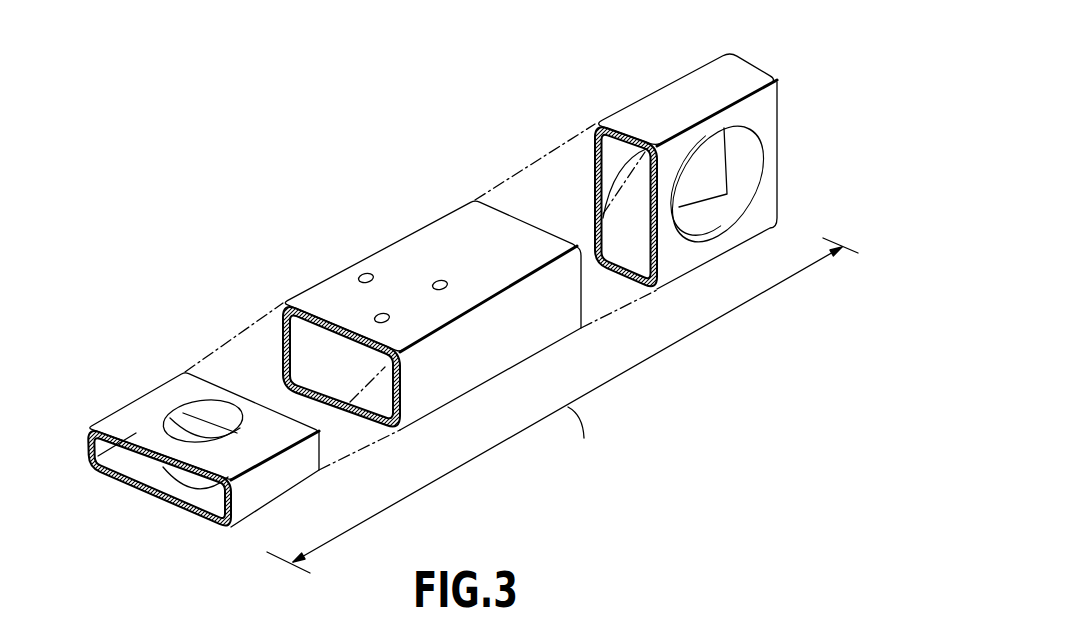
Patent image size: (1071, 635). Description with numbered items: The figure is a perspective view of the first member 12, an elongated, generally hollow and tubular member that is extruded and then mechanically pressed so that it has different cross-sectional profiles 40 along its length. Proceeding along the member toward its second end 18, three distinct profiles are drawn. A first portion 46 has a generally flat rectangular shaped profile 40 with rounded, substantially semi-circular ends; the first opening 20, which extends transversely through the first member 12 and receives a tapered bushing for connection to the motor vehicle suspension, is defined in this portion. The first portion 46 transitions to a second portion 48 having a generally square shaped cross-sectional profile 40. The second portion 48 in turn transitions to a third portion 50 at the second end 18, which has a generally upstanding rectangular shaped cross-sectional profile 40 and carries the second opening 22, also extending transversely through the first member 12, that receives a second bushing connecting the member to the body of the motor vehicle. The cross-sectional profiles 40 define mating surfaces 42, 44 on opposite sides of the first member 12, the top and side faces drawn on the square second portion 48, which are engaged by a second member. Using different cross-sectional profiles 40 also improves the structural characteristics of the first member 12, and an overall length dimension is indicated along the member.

The first member 12 is at (245, 163).
The second end 18 is at (753, 66).
The first opening 20 is at (167, 462).
The second opening 22 is at (761, 178).
The cross-sectional profiles 40 is at (198, 523).
The mating surface 42 is at (437, 246).
The mating surface 44 is at (527, 358).
The first portion 46 is at (281, 496).
The second portion 48 is at (462, 395).
The third portion 50 is at (713, 257).